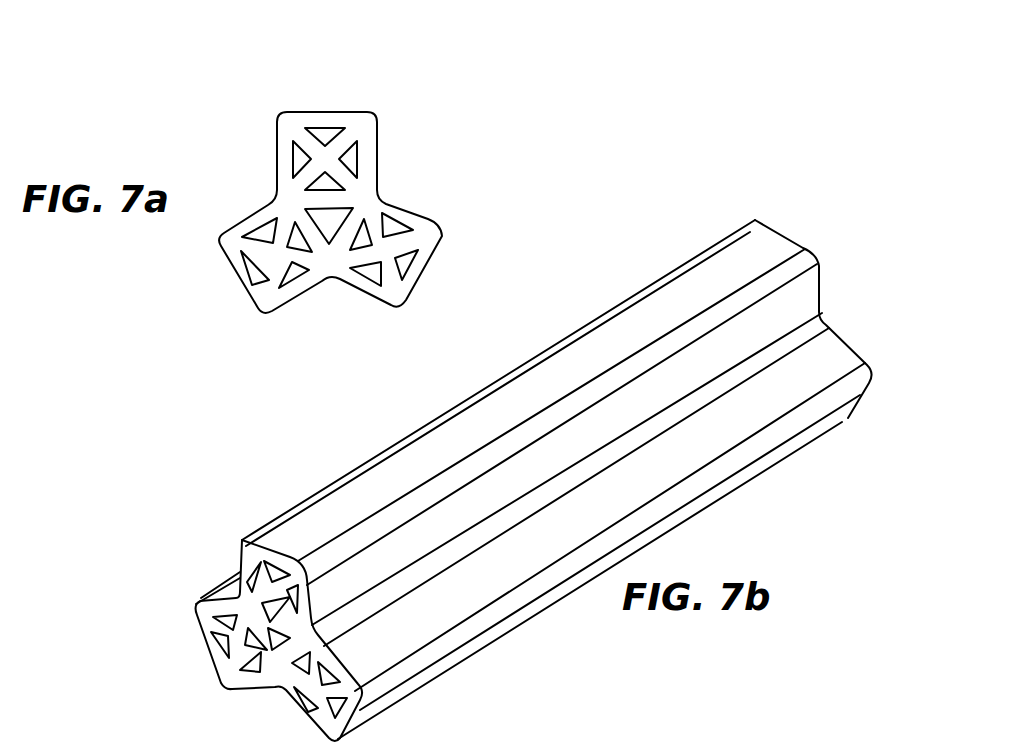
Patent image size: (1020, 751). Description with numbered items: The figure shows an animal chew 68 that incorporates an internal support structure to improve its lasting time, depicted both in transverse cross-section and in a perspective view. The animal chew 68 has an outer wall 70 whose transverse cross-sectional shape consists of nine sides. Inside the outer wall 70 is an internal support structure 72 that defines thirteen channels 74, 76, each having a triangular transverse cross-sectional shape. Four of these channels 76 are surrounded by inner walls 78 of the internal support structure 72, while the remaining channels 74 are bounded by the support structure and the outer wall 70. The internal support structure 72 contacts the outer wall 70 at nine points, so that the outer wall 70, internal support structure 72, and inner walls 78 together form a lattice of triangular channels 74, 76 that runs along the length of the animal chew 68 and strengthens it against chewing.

In FIG. 7A, the animal chew 68 is at (240, 175).
In FIG. 7B, the animal chew 68 is at (246, 491).
In FIG. 7A, the outer wall 70 is at (320, 113).
In FIG. 7B, the outer wall 70 is at (733, 250).
In FIG. 7A, the internal support structure 72 is at (347, 200).
In FIG. 7B, the internal support structure 72 is at (277, 627).
In FIG. 7A, the channels 74 is at (406, 262).
In FIG. 7A, the channels 76 is at (325, 222).
In FIG. 7A, the inner walls 78 is at (318, 233).